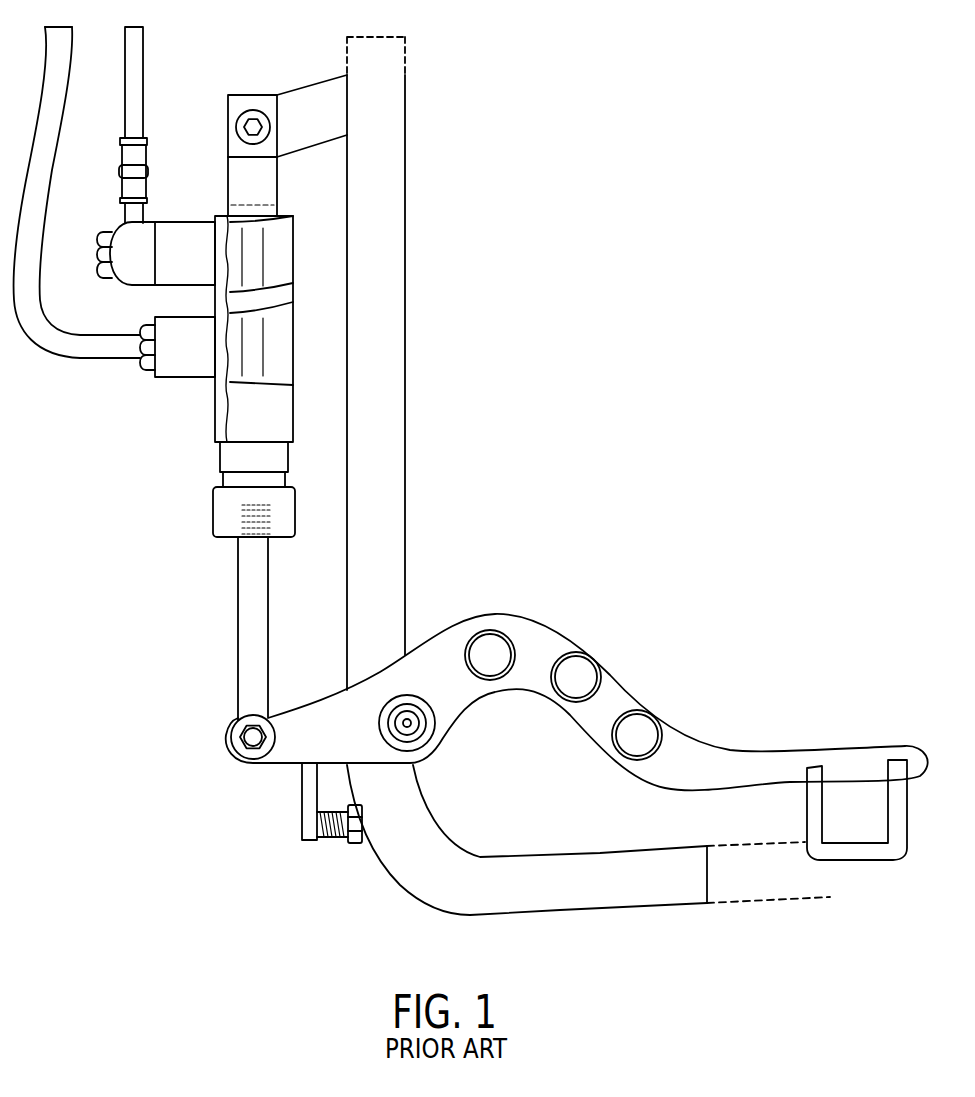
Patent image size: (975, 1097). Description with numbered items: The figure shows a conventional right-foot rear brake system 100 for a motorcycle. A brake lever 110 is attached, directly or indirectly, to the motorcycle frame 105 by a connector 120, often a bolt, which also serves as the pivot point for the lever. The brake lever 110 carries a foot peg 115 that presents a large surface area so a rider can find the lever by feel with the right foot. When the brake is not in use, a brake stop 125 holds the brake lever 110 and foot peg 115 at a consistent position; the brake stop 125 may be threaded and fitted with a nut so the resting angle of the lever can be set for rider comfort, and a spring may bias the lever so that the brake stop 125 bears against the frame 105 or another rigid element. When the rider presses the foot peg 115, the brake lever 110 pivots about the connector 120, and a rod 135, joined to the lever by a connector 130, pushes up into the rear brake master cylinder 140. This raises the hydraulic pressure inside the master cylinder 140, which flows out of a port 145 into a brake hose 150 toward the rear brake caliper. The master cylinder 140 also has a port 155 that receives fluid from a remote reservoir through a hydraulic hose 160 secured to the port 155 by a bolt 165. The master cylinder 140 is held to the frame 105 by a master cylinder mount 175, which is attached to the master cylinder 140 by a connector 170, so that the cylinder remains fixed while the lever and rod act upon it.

The rear brake system 100 is at (725, 144).
The motorcycle frame 105 is at (413, 363).
The brake lever 110 is at (577, 727).
The foot peg 115 is at (865, 844).
The connector 120 is at (444, 726).
The brake stop 125 is at (333, 835).
The connector 130 is at (219, 733).
The rod 135 is at (215, 628).
The rear brake master cylinder 140 is at (217, 488).
The port 145 is at (166, 377).
The brake hose 150 is at (77, 230).
The port 155 is at (234, 296).
The hydraulic hose 160 is at (168, 125).
The bolt 165 is at (145, 222).
The connector 170 is at (255, 126).
The master cylinder mount 175 is at (312, 84).